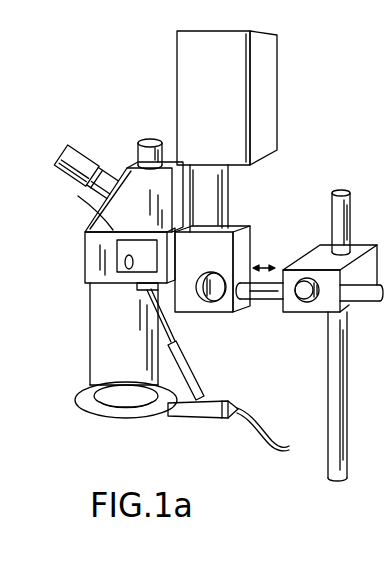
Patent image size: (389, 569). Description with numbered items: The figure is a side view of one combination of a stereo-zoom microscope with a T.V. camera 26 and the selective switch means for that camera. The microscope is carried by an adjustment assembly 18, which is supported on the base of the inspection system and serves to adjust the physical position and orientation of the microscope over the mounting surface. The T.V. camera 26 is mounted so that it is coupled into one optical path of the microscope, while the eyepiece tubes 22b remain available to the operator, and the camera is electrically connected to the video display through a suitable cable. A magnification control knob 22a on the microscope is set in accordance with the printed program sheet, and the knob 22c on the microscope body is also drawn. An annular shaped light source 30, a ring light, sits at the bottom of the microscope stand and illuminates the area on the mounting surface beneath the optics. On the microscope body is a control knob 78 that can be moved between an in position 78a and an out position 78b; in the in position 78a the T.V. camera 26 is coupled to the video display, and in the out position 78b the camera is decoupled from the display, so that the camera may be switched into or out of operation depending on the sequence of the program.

The adjustment assembly 18 is at (293, 327).
The magnification control knob 22a is at (134, 157).
The angled eyepiece tube 22b is at (85, 162).
The focusing knob on microscope block 22c is at (210, 302).
The T.V. camera 26 is at (190, 72).
The annular shaped light source 30 is at (75, 398).
The control knob 78 is at (122, 240).
The in position 78a is at (118, 247).
The out position 78b is at (145, 272).